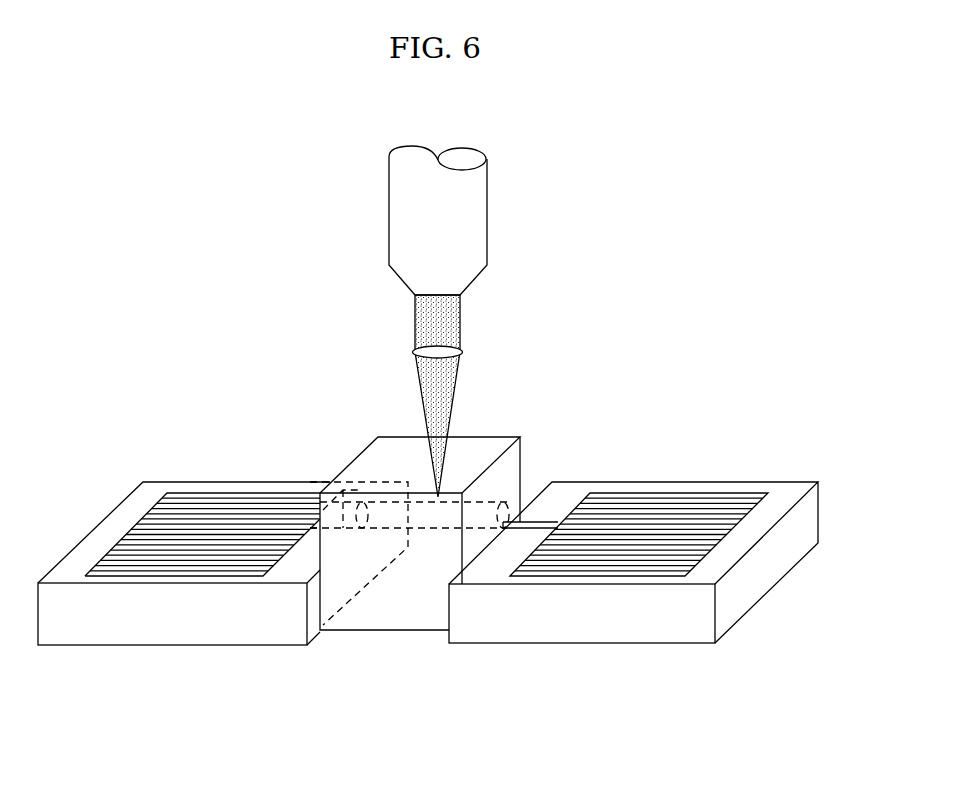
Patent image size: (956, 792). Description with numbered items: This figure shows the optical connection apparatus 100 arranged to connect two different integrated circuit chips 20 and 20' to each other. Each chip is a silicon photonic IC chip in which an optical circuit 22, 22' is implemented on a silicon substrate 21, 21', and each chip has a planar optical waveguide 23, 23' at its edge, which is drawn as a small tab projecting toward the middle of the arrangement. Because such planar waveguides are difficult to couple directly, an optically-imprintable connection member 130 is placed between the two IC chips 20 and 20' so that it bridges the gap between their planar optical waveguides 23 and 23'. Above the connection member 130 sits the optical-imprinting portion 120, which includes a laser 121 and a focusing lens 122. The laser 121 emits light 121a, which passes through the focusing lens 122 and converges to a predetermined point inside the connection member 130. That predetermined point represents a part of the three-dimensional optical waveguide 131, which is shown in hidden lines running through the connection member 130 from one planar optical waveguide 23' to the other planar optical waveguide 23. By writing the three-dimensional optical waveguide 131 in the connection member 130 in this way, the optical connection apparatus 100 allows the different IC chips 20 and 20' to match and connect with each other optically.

The optical connection apparatus 100 is at (620, 298).
The optical-imprinting portion 120 is at (347, 228).
The laser 121 is at (470, 223).
The light 121a is at (417, 323).
The focusing lens 122 is at (462, 352).
The connection member 130 is at (377, 458).
The 3D optical waveguide 131 is at (475, 503).
The IC chip 20 is at (653, 501).
The silicon substrate 21 is at (638, 562).
The optical circuit 22 is at (639, 502).
The planar optical waveguide 23 is at (536, 481).
The IC chip 20' is at (184, 540).
The silicon substrate 21' is at (184, 601).
The optical circuit 22' is at (202, 499).
The planar optical waveguide 23' is at (300, 483).